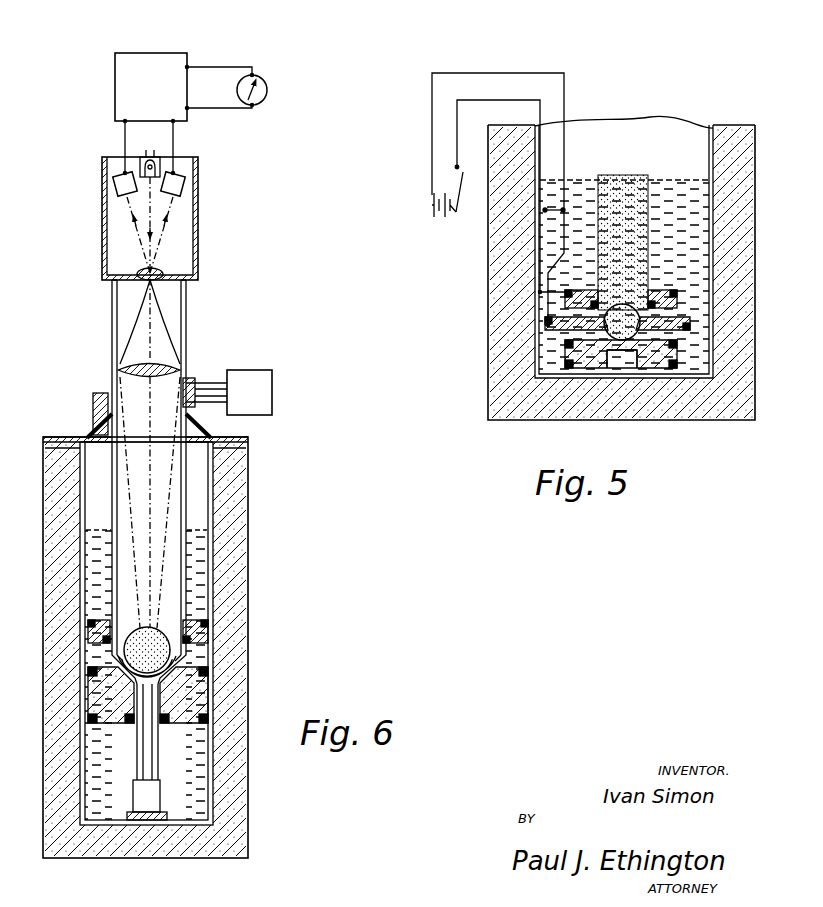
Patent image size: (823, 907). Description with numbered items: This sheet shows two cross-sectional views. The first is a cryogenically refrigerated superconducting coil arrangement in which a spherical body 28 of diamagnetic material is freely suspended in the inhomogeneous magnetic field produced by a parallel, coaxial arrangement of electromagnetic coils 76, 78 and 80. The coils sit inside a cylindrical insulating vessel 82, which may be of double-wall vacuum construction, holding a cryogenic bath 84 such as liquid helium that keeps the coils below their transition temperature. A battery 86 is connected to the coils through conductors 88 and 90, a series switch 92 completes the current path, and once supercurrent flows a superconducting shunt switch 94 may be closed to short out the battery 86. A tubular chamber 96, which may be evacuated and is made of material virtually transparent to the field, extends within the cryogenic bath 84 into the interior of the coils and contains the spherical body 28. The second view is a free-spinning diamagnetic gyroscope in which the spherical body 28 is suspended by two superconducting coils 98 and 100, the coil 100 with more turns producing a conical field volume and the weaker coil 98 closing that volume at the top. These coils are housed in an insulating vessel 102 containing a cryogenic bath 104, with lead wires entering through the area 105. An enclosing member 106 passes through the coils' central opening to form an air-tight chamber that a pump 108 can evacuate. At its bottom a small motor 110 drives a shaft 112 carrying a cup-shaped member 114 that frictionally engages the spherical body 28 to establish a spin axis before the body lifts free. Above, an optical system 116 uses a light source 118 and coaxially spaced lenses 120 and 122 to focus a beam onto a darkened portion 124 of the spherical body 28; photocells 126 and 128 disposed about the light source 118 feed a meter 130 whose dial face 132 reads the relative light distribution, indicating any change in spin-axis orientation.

In FIG. 6, the spherical body 28 is at (150, 628).
In FIG. 5, the spherical body 28 is at (622, 305).
In FIG. 5, the electromagnetic coil 76 is at (672, 296).
In FIG. 5, the electromagnetic coil 78 is at (690, 325).
In FIG. 5, the electromagnetic coil 80 is at (660, 370).
In FIG. 5, the insulating vessel 82 is at (488, 352).
In FIG. 5, the cryogenic bath 84 is at (673, 180).
In FIG. 5, the battery 86 is at (433, 212).
In FIG. 5, the conductor 88 is at (480, 73).
In FIG. 5, the conductor 90 is at (517, 100).
In FIG. 5, the series switch 92 is at (460, 205).
In FIG. 5, the superconducting shunt switch 94 is at (548, 208).
In FIG. 5, the tubular chamber 96 is at (627, 175).
In FIG. 6, the superconducting coil 98 is at (202, 630).
In FIG. 6, the superconducting coil 100 is at (196, 706).
In FIG. 6, the insulating vessel 102 is at (250, 480).
In FIG. 6, the cryogenic bath 104 is at (196, 540).
In FIG. 6, the lead-in area 105 is at (101, 393).
In FIG. 6, the enclosing member 106 is at (188, 318).
In FIG. 6, the pump 108 is at (272, 370).
In FIG. 6, the motor 110 is at (145, 822).
In FIG. 6, the shaft 112 is at (147, 745).
In FIG. 6, the cup-shaped member 114 is at (170, 669).
In FIG. 6, the optical system 116 is at (212, 225).
In FIG. 6, the light source 118 is at (162, 172).
In FIG. 6, the lens 120 is at (165, 270).
In FIG. 6, the lens 122 is at (170, 367).
In FIG. 6, the darkened portion 124 is at (157, 627).
In FIG. 6, the photocell 126 is at (185, 183).
In FIG. 6, the photocell 128 is at (115, 190).
In FIG. 6, the meter 130 is at (115, 68).
In FIG. 6, the dial face 132 is at (268, 92).